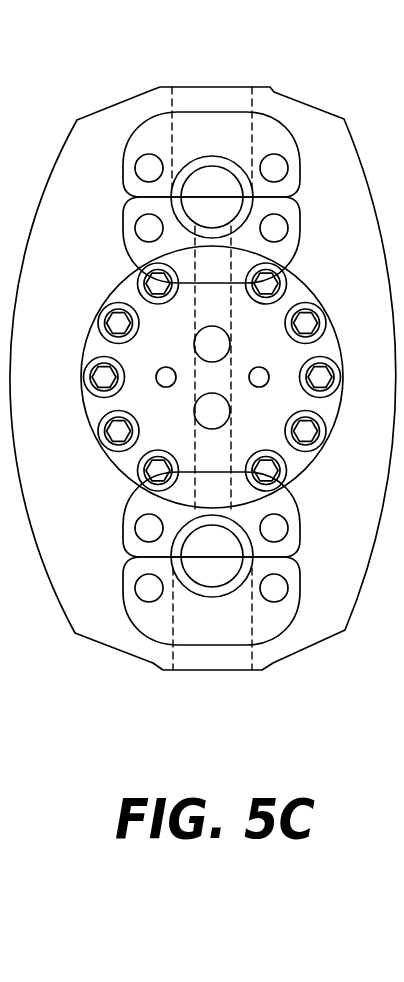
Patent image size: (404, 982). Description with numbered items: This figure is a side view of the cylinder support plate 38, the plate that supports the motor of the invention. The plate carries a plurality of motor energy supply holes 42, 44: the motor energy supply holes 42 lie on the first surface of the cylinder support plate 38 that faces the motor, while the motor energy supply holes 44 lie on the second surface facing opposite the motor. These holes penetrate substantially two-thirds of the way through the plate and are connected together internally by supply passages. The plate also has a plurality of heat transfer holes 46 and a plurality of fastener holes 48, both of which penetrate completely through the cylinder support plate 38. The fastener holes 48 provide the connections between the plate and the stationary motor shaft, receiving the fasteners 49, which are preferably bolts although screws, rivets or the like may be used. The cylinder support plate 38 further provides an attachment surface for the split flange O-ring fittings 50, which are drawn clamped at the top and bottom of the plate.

The cylinder support plate 38 is at (313, 637).
The motor energy supply holes 42 is at (230, 332).
The motor energy supply holes 44 is at (202, 165).
The heat transfer holes 46 is at (157, 367).
The fastener holes 48 is at (103, 442).
The fasteners 49 is at (330, 372).
The split flange O-ring fittings 50 is at (280, 129).